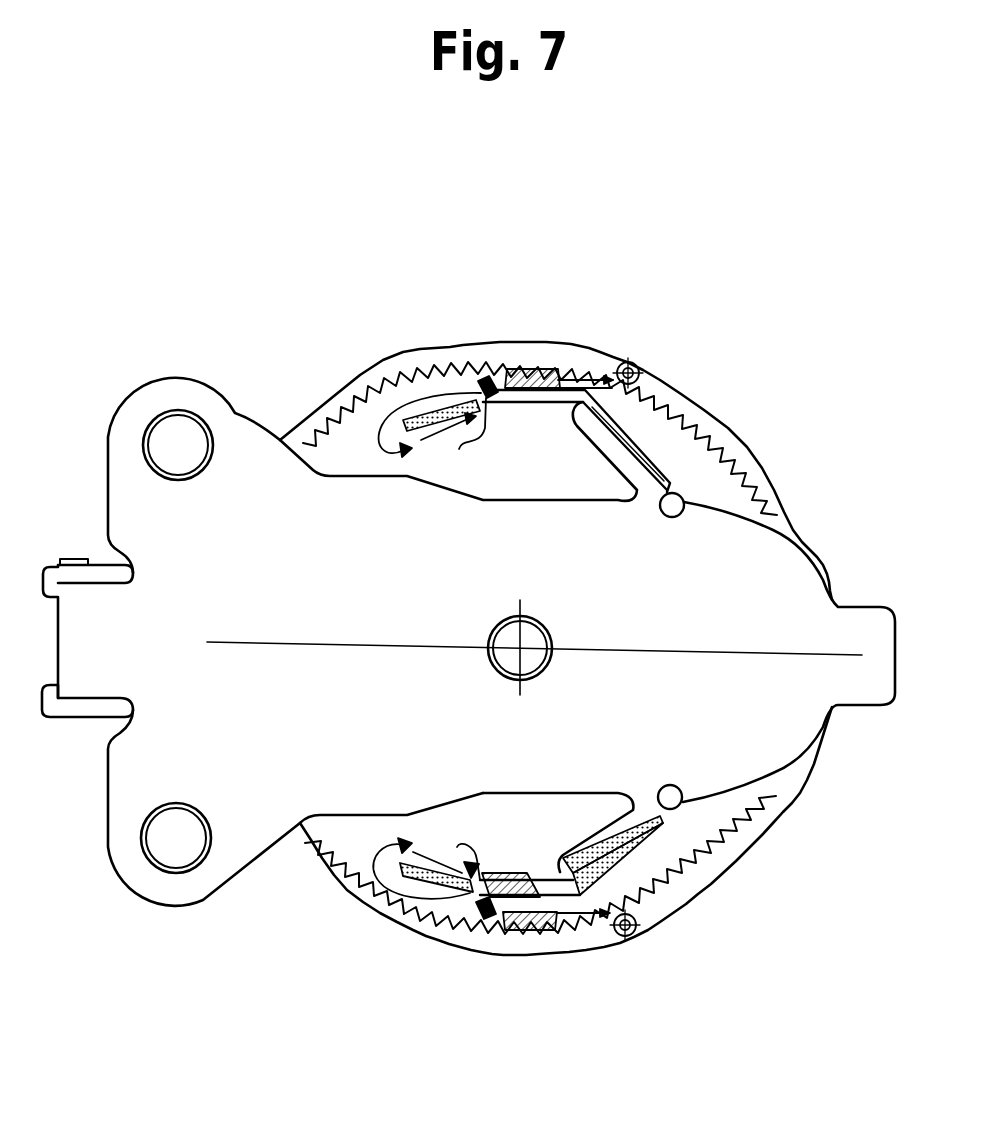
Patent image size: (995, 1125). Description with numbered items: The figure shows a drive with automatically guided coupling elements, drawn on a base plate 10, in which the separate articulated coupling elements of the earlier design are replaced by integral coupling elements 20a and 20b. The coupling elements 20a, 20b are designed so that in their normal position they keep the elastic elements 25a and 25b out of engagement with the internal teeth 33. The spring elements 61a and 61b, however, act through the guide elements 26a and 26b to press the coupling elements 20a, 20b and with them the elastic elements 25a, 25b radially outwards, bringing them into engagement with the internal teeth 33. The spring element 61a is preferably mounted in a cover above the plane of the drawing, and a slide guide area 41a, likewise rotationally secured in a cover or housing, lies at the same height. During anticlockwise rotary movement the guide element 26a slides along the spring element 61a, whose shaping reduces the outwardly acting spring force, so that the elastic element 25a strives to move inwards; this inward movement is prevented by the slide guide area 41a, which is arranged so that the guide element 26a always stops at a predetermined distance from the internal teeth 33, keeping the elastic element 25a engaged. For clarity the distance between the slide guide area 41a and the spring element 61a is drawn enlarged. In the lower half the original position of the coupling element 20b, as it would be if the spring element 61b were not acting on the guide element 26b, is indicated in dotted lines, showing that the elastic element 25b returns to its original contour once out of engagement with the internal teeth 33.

The base plate 10 is at (353, 510).
The internal teeth 33 is at (347, 867).
The coupling element 20a is at (618, 447).
The coupling element 20b is at (660, 818).
The elastic element 25a is at (523, 368).
The elastic element 25b is at (513, 927).
The guide element 26a is at (485, 380).
The guide element 26b is at (482, 913).
The slide guide area 41a is at (425, 412).
The spring element 61a is at (628, 373).
The spring element 61b is at (583, 927).